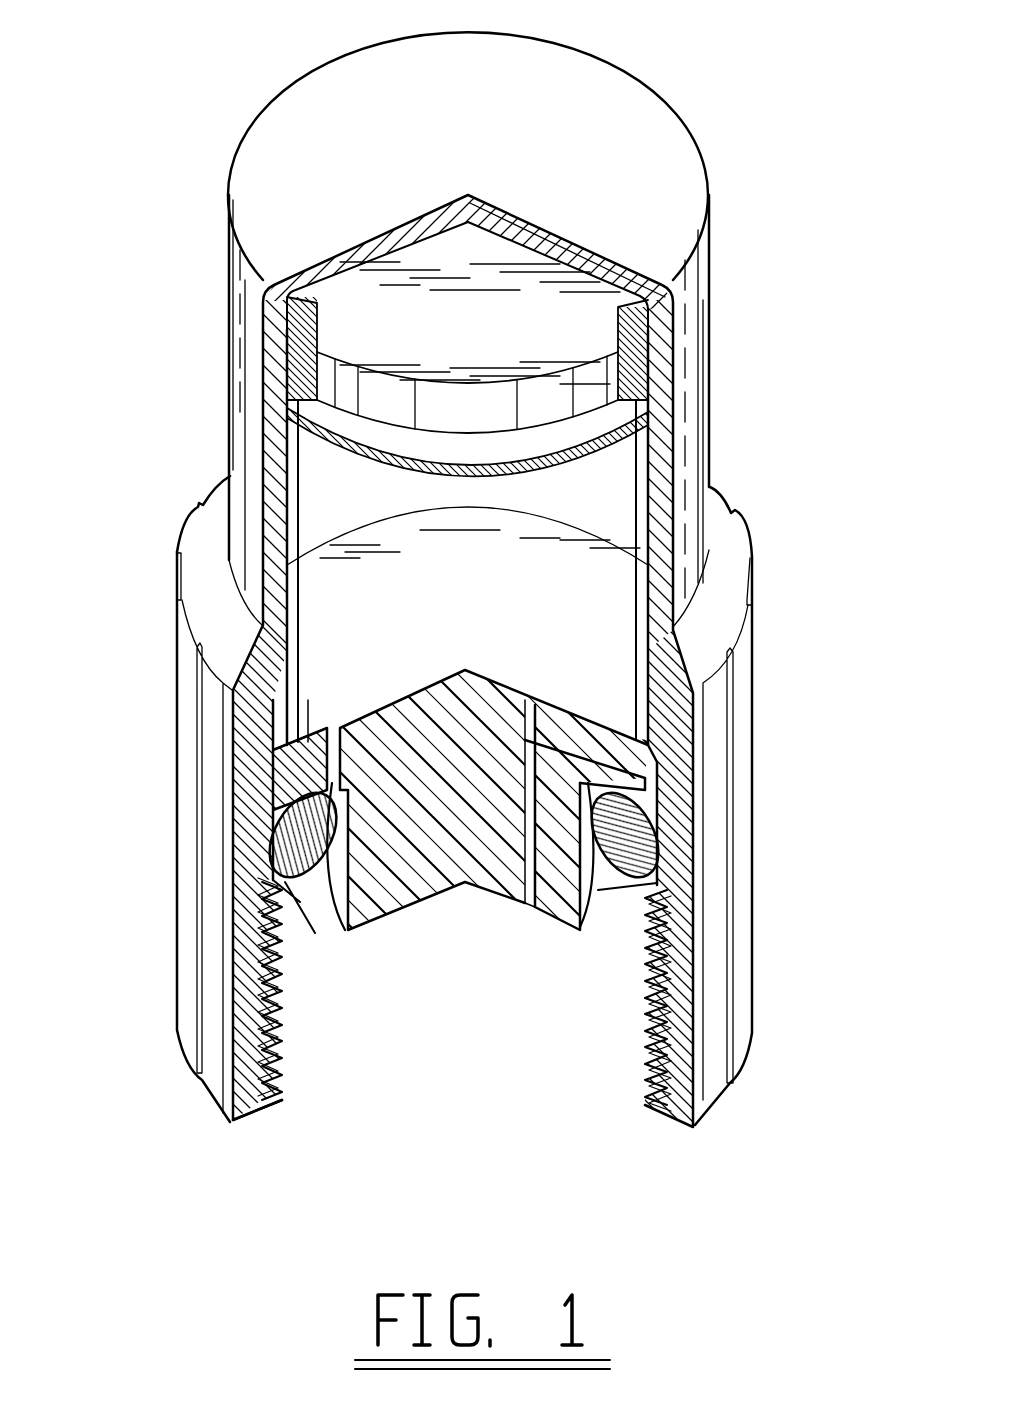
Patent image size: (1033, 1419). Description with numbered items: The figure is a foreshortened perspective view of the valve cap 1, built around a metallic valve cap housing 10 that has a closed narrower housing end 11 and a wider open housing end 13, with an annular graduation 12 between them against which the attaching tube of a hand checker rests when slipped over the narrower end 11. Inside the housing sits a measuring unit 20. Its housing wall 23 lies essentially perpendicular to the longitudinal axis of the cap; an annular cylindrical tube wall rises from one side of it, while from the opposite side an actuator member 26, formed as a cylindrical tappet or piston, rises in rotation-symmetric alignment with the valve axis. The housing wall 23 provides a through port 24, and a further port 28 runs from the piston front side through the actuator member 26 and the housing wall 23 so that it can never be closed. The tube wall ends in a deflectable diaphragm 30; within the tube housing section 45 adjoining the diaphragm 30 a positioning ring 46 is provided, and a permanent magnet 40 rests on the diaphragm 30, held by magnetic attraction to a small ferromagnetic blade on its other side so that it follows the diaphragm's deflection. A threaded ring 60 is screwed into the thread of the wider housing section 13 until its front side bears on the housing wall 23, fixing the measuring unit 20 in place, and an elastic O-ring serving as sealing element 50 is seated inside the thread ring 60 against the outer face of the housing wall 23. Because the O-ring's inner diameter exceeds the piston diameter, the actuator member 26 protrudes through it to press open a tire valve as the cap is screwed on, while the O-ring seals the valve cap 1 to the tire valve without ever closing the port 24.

The valve cap 1 is at (782, 254).
The valve cap housing 10 is at (233, 352).
The closed narrower housing end 11 is at (570, 87).
The annular graduation 12 is at (718, 625).
The wider open housing end 13 is at (248, 1118).
The measuring unit 20 is at (501, 716).
The housing wall 23 is at (307, 757).
The through port 24 is at (492, 810).
The actuator member 26 is at (338, 893).
The port 28 is at (525, 905).
The deflectable diaphragm 30 is at (343, 455).
The permanent magnet 40 is at (390, 342).
The tube housing section 45 is at (293, 333).
The positioning ring 46 is at (632, 338).
The sealing element 50 is at (297, 878).
The threaded ring 60 is at (282, 1094).